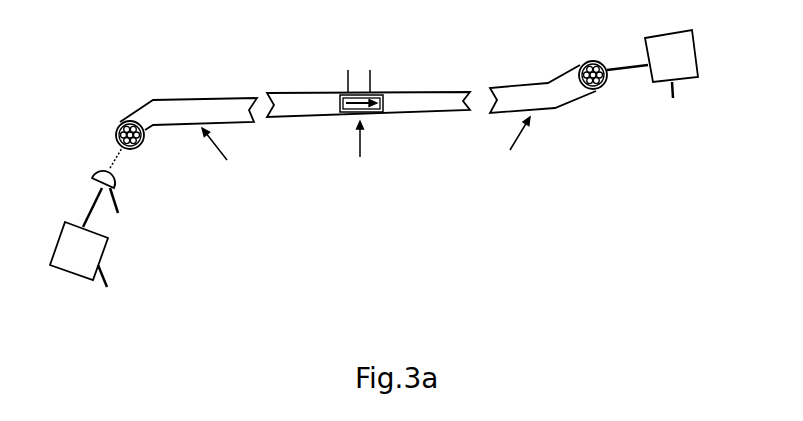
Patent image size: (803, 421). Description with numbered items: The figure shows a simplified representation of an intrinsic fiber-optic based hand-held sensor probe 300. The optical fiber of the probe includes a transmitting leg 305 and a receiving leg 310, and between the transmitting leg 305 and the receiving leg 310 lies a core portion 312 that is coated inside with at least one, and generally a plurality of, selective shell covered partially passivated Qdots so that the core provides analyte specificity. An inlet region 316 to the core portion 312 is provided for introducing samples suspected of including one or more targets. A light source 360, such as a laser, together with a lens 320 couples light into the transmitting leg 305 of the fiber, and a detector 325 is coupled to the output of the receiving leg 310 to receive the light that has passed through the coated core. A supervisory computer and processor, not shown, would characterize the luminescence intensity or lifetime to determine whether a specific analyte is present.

The hand-held sensor probe 300 is at (595, 270).
The transmitting leg 305 is at (195, 100).
The receiving leg 310 is at (523, 83).
The core portion 312 is at (376, 93).
The inlet region 316 is at (360, 66).
The lens 320 is at (94, 177).
The detector 325 is at (700, 43).
The light source 360 is at (56, 242).